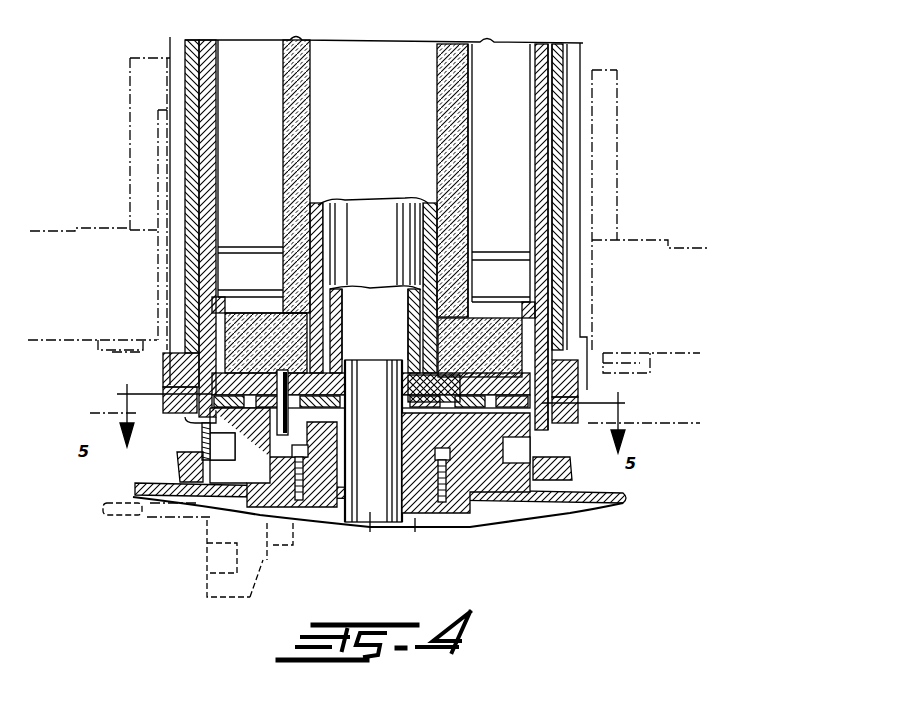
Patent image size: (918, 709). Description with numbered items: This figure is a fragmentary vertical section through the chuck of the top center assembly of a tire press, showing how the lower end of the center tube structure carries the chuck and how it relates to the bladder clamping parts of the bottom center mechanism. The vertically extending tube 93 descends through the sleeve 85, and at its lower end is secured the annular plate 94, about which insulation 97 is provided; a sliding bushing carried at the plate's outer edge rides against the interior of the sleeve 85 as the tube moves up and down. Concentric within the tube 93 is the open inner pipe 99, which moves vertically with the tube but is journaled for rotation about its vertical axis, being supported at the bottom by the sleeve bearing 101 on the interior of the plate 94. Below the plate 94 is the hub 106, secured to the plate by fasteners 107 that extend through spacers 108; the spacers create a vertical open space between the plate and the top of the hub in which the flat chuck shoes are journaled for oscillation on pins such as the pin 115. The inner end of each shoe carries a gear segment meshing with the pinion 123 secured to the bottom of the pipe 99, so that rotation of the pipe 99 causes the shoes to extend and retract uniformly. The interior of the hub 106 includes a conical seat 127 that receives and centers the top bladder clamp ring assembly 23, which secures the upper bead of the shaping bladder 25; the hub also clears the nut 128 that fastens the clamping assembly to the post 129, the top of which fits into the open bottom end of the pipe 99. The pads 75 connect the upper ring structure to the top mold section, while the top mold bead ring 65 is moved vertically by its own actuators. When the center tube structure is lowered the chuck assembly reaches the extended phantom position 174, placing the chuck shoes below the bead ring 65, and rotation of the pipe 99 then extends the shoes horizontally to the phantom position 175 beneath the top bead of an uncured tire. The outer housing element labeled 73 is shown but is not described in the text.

The top bladder clamp ring assembly 23 is at (475, 523).
The shaping bladder 25 is at (612, 489).
The top mold bead ring 65 is at (570, 462).
The outer housing 73 is at (560, 298).
The pads 75 is at (553, 428).
The sleeve 85 is at (545, 143).
The tube 93 is at (437, 97).
The annular plate 94 is at (517, 387).
The insulation 97 is at (485, 317).
The pipe 99 is at (357, 273).
The sleeve bearing 101 is at (413, 387).
The hub 106 is at (180, 480).
The fasteners 107 is at (480, 347).
The spacers 108 is at (447, 412).
The pin 115 is at (283, 373).
The pinion 123 is at (335, 427).
The conical seat 127 is at (237, 447).
The nut 128 is at (405, 513).
The post 129 is at (370, 527).
The extended phantom line position of chuck assembly 174 is at (261, 558).
The horizontally extended chuck shoe position 175 is at (130, 517).